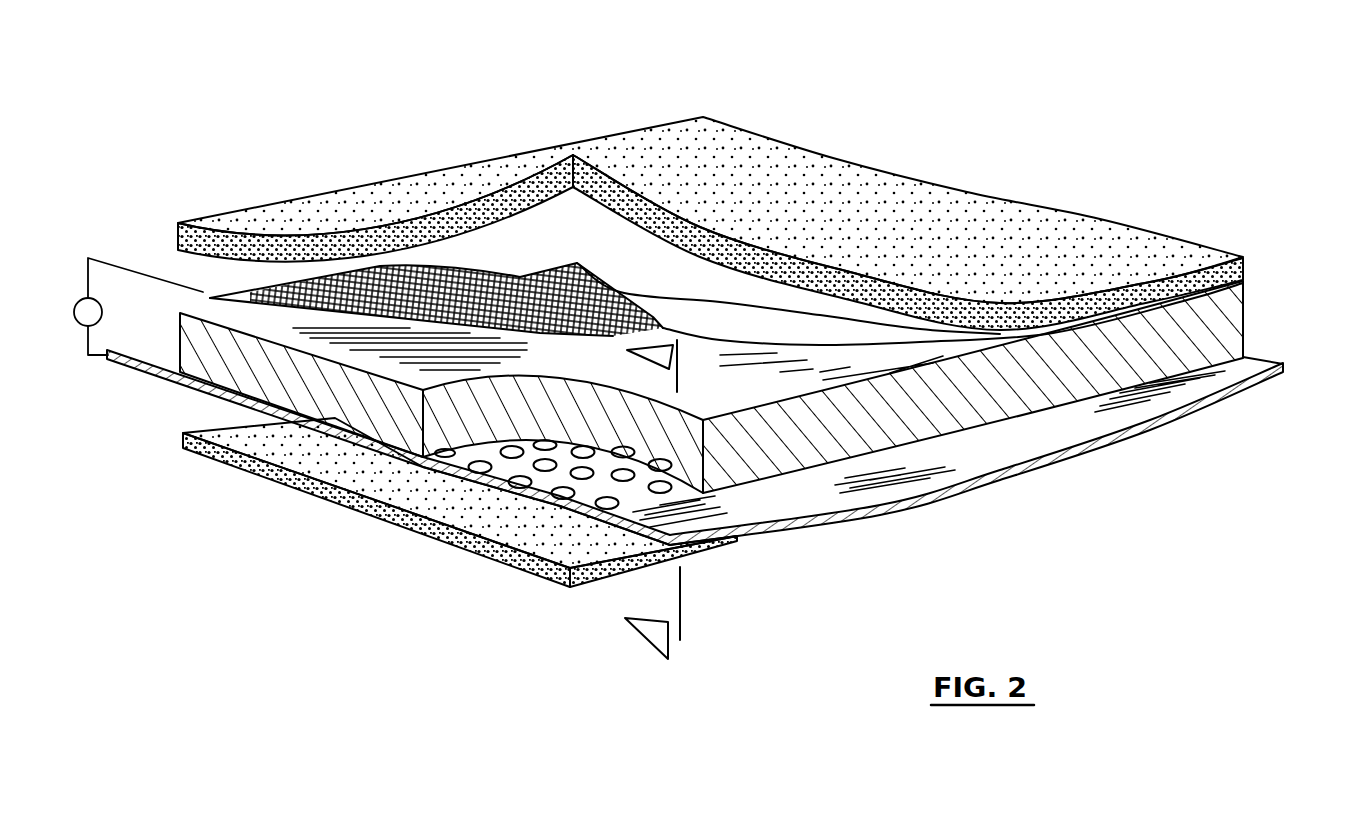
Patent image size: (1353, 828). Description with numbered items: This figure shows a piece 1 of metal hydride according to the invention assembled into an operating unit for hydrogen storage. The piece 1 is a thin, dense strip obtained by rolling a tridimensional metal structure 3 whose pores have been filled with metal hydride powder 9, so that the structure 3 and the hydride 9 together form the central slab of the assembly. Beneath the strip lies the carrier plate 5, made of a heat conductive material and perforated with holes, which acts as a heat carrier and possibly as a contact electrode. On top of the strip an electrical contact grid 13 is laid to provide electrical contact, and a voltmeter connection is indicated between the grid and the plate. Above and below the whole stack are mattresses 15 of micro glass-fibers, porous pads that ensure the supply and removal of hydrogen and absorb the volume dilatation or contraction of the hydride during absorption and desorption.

The piece 1 is at (712, 359).
The tridimensional metal structure 3 is at (711, 470).
The carrier plate 5 is at (163, 378).
The metal hydride powder 9 is at (293, 378).
The electrical contact grid 13 is at (347, 295).
The mattresses of micro glass-fibers 15 is at (467, 190).